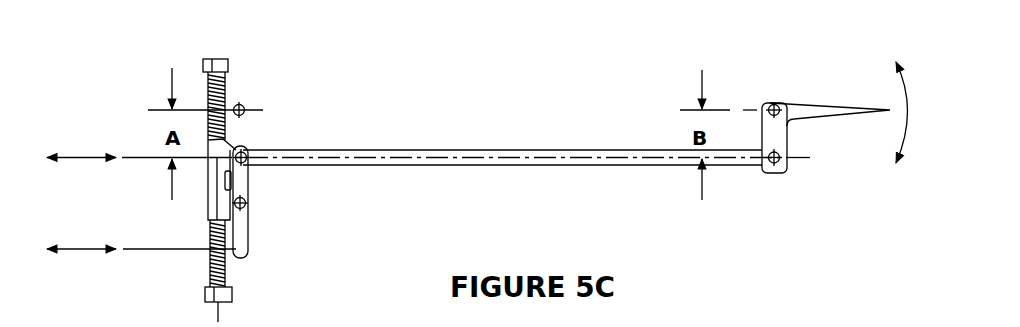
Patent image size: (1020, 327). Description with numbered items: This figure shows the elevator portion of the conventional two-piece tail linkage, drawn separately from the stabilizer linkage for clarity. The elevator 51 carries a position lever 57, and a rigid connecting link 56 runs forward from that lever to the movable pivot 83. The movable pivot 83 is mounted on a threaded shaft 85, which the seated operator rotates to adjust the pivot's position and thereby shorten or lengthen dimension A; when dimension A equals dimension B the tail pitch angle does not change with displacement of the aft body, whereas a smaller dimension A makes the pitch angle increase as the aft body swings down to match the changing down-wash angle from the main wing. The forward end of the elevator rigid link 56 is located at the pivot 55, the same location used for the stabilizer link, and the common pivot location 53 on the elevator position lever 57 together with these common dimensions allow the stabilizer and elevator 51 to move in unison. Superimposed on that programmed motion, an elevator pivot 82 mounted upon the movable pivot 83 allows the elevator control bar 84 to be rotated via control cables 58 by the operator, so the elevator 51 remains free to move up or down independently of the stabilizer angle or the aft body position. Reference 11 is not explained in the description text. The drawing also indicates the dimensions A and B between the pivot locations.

The mounting hole 11 is at (244, 105).
The elevator 51 is at (837, 107).
The common pivot location 53 is at (770, 107).
The pivot 55 is at (244, 155).
The connecting link 56 is at (435, 148).
The position lever 57 is at (787, 163).
The control cables 58 is at (147, 156).
The elevator pivot 82 is at (248, 203).
The movable pivot 83 is at (208, 203).
The elevator control bar 84 is at (232, 250).
The threaded shaft 85 is at (230, 278).